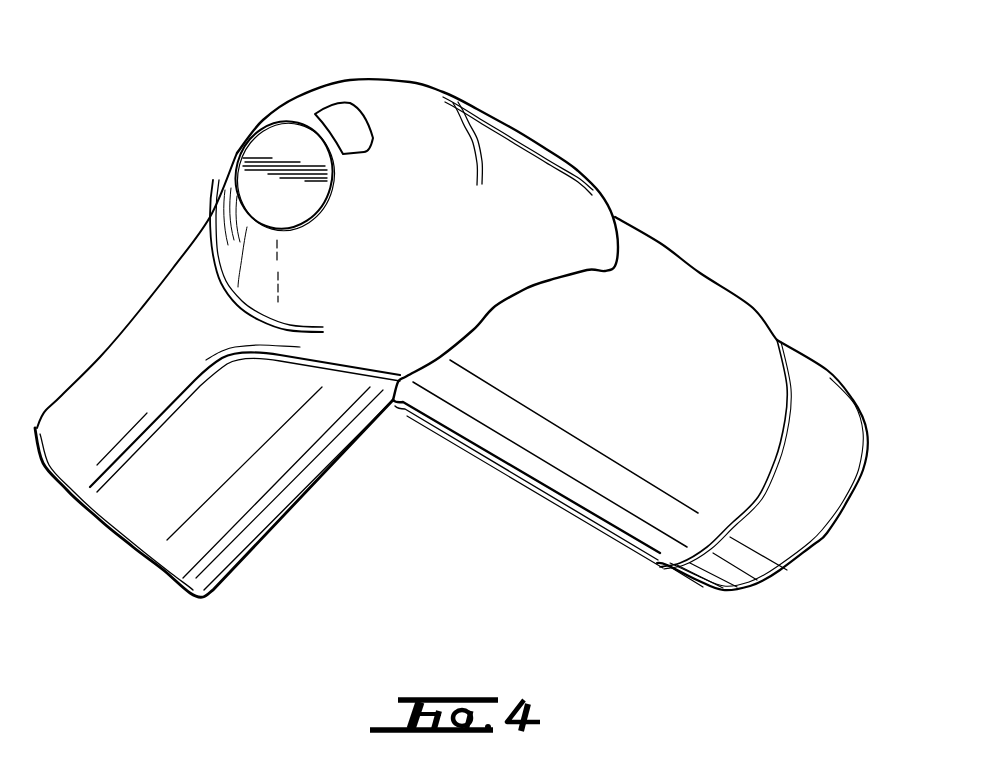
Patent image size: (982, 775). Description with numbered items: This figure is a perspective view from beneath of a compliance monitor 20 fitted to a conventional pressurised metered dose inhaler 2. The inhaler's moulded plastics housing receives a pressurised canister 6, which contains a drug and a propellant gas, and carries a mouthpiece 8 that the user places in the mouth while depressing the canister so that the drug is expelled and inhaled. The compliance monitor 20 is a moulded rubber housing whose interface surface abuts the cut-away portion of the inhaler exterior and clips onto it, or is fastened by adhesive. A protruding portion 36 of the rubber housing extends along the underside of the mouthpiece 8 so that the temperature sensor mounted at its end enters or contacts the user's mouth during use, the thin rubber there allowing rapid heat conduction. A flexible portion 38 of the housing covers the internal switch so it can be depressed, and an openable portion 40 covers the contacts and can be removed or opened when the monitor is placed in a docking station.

The pressurised metered dose inhaler 2 is at (738, 160).
The pressurised canister 6 is at (830, 497).
The mouthpiece 8 is at (267, 507).
The compliance monitor 20 is at (236, 153).
The protruding portion 36 is at (147, 330).
The flexible portion 38 is at (285, 140).
The openable portion 40 is at (344, 113).